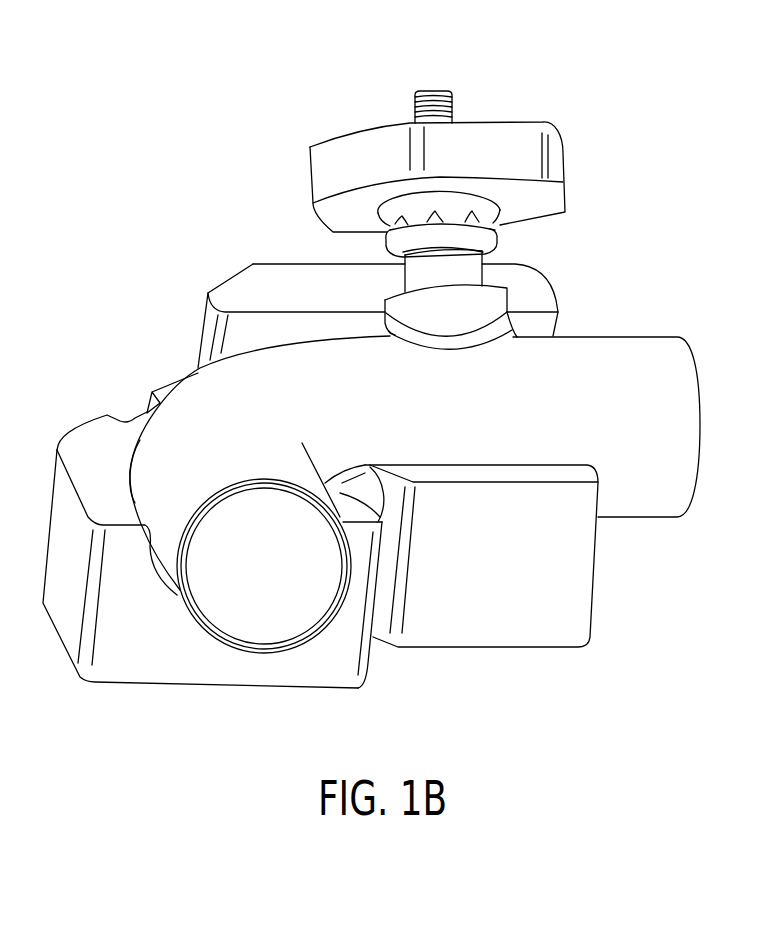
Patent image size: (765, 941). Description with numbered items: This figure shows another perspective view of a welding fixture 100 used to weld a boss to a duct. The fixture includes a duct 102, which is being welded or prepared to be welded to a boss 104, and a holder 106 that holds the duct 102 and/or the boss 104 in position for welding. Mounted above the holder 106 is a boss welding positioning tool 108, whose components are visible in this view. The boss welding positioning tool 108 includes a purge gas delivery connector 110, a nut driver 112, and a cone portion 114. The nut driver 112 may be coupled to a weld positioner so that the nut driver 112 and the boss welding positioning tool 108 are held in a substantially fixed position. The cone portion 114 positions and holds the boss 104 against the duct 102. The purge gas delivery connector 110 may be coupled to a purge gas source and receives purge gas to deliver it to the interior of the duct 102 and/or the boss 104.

The welding fixture 100 is at (133, 127).
The duct 102 is at (312, 632).
The boss 104 is at (500, 283).
The holder 106 is at (208, 293).
The boss welding positioning tool 108 is at (435, 88).
The purge gas delivery connector 110 is at (452, 108).
The nut driver 112 is at (563, 182).
The cone portion 114 is at (373, 220).